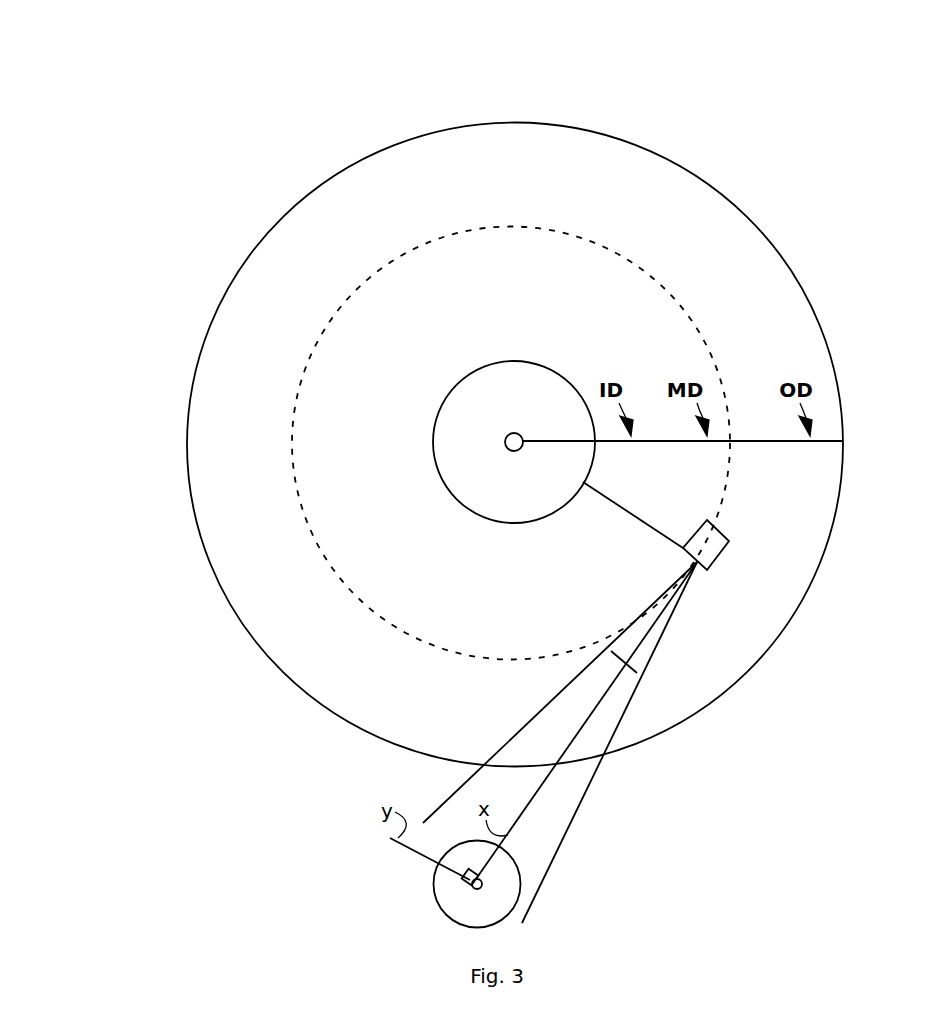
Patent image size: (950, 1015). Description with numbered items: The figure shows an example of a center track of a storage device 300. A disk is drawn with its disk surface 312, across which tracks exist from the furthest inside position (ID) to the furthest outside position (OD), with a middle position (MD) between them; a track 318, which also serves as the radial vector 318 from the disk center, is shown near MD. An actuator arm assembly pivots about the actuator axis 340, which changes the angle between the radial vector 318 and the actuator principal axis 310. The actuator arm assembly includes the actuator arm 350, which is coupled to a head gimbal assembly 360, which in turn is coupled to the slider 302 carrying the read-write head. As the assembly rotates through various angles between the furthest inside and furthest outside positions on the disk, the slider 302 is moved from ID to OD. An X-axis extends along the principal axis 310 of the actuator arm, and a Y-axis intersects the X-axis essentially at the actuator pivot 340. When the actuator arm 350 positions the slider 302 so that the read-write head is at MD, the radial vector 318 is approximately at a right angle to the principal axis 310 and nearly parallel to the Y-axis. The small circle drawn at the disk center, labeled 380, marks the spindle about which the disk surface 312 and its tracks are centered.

The storage device 300 is at (124, 126).
The disk surface 312 is at (192, 398).
The radial vector 318 is at (703, 327).
The disk center / spindle 380 is at (513, 423).
The slider 302 is at (722, 552).
The actuator principal axis 310 is at (567, 749).
The actuator arm 350 is at (612, 734).
The head gimbal assembly 360 is at (657, 626).
The actuator axis 340 is at (438, 905).